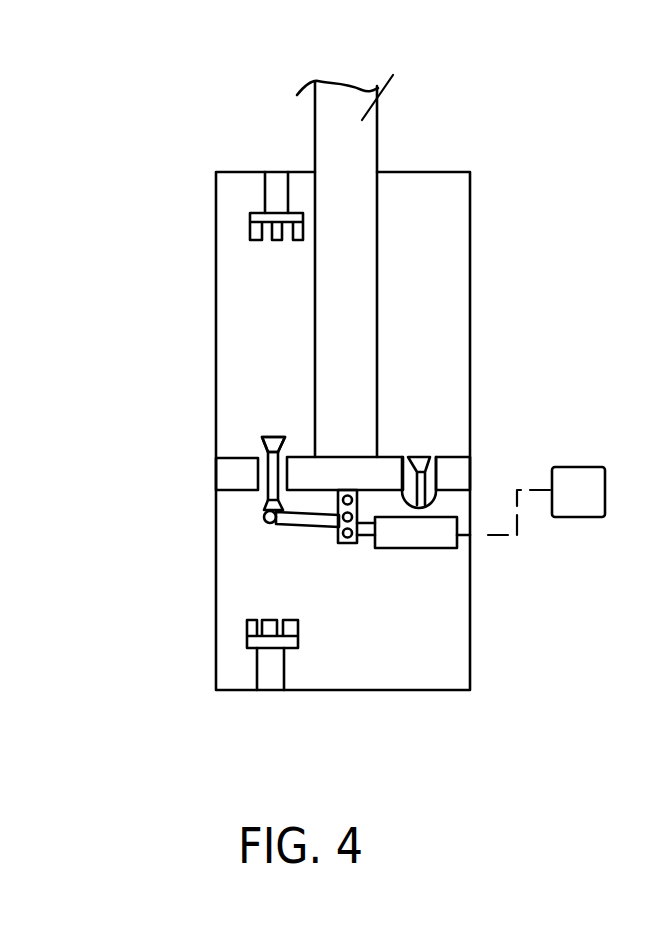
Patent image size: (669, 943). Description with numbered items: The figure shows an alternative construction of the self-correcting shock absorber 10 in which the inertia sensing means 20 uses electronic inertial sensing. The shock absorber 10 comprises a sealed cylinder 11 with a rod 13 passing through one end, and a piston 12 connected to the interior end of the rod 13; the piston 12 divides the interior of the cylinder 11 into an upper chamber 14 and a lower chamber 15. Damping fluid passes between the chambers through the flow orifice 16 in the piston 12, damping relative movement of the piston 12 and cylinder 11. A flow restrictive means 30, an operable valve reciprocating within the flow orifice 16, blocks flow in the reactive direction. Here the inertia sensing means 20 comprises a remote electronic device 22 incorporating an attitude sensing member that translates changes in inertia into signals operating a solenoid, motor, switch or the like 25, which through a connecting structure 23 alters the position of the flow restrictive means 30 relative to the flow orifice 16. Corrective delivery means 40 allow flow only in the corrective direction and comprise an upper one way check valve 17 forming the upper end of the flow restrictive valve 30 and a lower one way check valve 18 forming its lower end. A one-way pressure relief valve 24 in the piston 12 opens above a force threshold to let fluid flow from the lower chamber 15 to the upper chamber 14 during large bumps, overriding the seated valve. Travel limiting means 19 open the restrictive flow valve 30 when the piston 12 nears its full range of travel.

The self-correcting shock absorber 10 is at (505, 137).
The sealed cylinder 11 is at (472, 232).
The piston 12 is at (462, 473).
The rod 13 is at (378, 93).
The upper chamber 14 is at (428, 343).
The lower chamber 15 is at (400, 627).
The flow orifice 16 is at (258, 457).
The upper one way check valve 17 is at (264, 437).
The lower one way check valve 18 is at (265, 507).
The travel limiting means 19 is at (266, 673).
The inertia sensing means 20 is at (425, 575).
The remote electronic device 22 is at (585, 468).
The connecting structure 23 is at (293, 526).
The one-way pressure relief valve 24 is at (424, 457).
The solenoid, motor or switch 25 is at (438, 541).
The flow restrictive means 30 is at (268, 473).
The corrective delivery means 40 is at (282, 413).